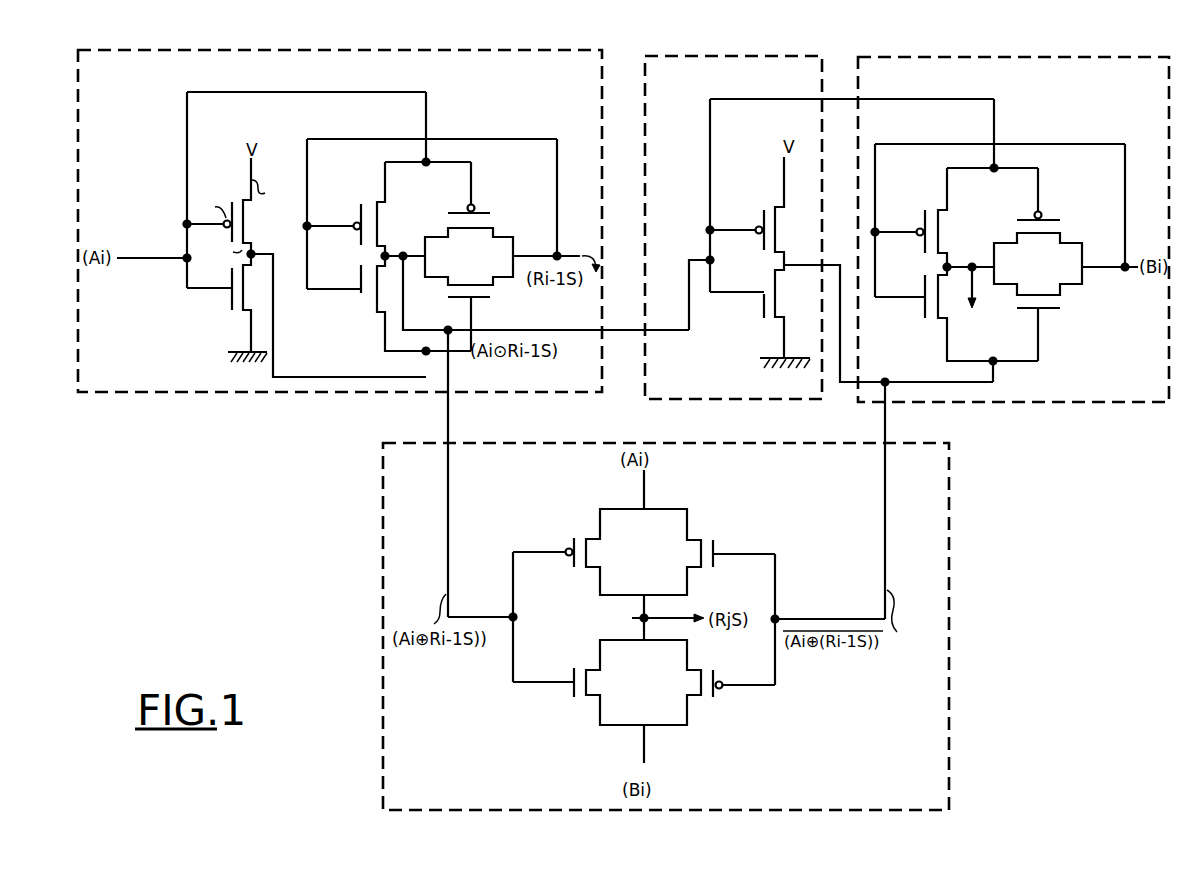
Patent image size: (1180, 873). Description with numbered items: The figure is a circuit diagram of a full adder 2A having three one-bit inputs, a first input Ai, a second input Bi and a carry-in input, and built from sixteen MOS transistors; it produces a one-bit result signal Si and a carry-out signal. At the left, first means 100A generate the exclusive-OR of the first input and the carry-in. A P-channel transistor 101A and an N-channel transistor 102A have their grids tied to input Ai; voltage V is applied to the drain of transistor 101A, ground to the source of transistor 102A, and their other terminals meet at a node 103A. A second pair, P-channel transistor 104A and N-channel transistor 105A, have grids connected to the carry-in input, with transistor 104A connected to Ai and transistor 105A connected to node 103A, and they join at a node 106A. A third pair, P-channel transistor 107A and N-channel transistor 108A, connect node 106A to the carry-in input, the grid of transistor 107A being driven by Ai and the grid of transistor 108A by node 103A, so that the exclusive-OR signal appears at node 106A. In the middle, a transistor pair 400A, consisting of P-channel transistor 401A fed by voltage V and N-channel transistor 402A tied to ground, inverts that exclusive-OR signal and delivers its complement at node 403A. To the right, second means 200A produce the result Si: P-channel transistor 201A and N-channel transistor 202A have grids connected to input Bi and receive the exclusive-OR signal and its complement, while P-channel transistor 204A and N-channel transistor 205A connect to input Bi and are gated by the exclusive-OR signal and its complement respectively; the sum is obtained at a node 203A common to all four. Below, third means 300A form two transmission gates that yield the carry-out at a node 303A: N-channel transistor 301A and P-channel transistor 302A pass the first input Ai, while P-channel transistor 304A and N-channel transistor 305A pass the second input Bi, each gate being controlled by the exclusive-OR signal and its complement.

The full adder 2A is at (974, 440).
The first means 100A is at (507, 50).
The P-channel transistor 101A is at (236, 202).
The N-channel transistor 102A is at (230, 298).
The node 103A is at (256, 252).
The P-channel transistor 104A is at (358, 212).
The N-channel transistor 105A is at (360, 299).
The node 106A is at (408, 246).
The P-channel transistor 107A is at (476, 216).
The N-channel transistor 108A is at (497, 284).
The second means 200A is at (1152, 58).
The P-channel transistor 201A is at (922, 219).
The N-channel transistor 202A is at (923, 304).
The node 203A is at (973, 262).
The P-channel transistor 204A is at (1043, 219).
The N-channel transistor 205A is at (1053, 296).
The third means 300A is at (949, 715).
The N-channel transistor 301A is at (689, 539).
The P-channel transistor 302A is at (582, 569).
The node 303A is at (643, 617).
The P-channel transistor 304A is at (717, 690).
The N-channel transistor 305A is at (590, 683).
The transistor pair 400A is at (733, 227).
The P-channel transistor 401A is at (757, 226).
The N-channel transistor 402A is at (762, 303).
The node 403A is at (790, 240).